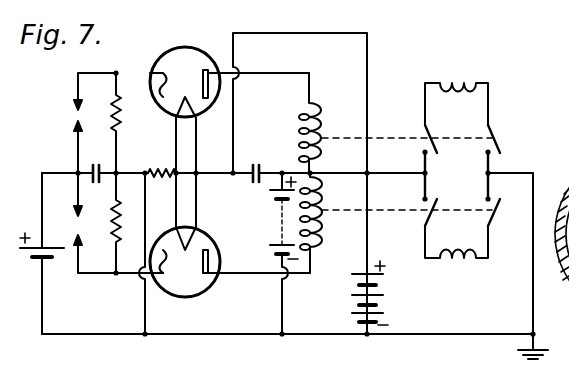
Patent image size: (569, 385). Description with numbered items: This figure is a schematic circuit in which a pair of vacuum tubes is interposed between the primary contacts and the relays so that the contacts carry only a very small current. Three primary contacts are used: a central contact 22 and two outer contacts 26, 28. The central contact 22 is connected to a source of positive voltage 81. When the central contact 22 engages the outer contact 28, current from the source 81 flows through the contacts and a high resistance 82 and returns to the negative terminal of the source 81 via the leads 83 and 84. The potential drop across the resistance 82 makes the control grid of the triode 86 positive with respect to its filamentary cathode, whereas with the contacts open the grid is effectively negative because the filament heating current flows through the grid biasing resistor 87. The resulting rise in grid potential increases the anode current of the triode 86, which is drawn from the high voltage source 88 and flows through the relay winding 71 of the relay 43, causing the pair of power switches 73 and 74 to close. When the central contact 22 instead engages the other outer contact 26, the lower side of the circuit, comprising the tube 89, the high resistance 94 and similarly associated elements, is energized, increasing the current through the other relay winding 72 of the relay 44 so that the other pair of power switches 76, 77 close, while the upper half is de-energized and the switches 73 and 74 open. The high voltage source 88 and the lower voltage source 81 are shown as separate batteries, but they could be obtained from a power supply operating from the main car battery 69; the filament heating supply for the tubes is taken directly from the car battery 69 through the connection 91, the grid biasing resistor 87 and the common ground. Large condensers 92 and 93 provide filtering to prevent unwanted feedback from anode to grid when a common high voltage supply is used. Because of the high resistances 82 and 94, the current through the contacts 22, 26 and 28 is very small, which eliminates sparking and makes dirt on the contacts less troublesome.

The central contact 22 is at (70, 168).
The outer contact 26 is at (110, 252).
The outer contact 28 is at (86, 91).
The relay 43 is at (456, 95).
The relay 44 is at (456, 252).
The car battery 69 is at (379, 253).
The relay winding 71 is at (318, 123).
The relay winding 72 is at (319, 223).
The power switch 73 is at (420, 147).
The power switch 74 is at (498, 147).
The power switch 76 is at (421, 202).
The power switch 77 is at (499, 202).
The source of positive voltage 81 is at (42, 253).
The high resistance 82 is at (126, 123).
The lead 83 is at (152, 253).
The lead 84 is at (287, 326).
The triode 86 is at (229, 128).
The grid biasing resistor 87 is at (162, 163).
The high voltage source 88 is at (278, 253).
The tube 89 is at (230, 271).
The connection 91 is at (300, 174).
The condenser 92 is at (96, 166).
The condenser 93 is at (252, 166).
The high resistance 94 is at (126, 223).